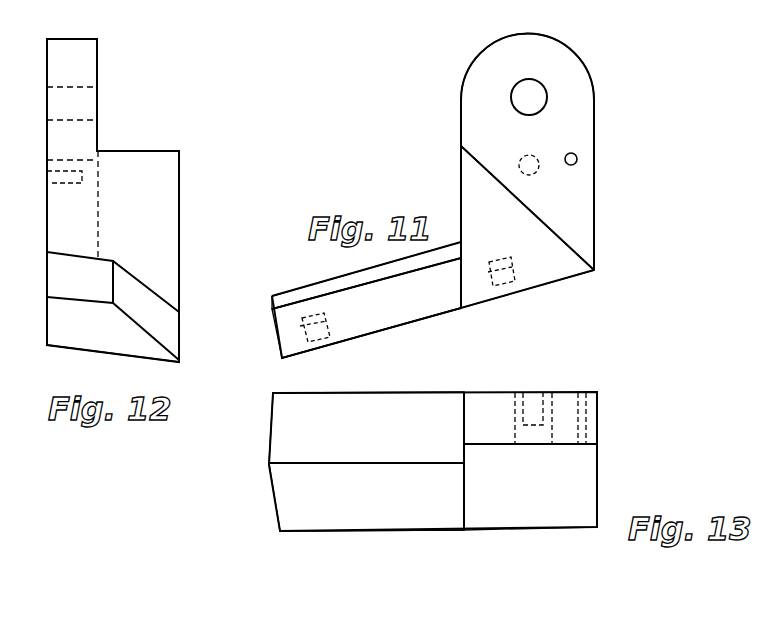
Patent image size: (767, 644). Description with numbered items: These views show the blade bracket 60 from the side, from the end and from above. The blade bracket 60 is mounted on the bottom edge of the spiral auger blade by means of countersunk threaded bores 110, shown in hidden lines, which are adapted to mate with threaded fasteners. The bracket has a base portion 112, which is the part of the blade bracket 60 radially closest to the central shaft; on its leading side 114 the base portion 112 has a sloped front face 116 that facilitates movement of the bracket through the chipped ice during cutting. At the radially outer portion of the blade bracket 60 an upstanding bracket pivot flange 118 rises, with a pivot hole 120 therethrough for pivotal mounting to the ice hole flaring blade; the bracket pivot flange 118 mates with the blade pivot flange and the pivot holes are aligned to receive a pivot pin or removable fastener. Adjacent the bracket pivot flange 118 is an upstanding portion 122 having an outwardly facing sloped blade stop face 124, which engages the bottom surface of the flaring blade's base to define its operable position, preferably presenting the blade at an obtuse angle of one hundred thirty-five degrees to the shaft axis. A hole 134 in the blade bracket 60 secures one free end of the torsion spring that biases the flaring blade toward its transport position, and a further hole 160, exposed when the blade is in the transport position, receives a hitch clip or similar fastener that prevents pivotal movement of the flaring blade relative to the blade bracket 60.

In FIG. 12, the blade bracket 60 is at (185, 145).
In FIG. 11, the blade bracket 60 is at (597, 90).
In FIG. 13, the blade bracket 60 is at (601, 410).
In FIG. 11, the countersunk threaded bores 110 is at (330, 332).
In FIG. 12, the base portion 112 is at (66, 344).
In FIG. 11, the base portion 112 is at (270, 316).
In FIG. 13, the base portion 112 is at (370, 436).
In FIG. 12, the leading side 114 is at (181, 340).
In FIG. 11, the leading side 114 is at (442, 312).
In FIG. 13, the leading side 114 is at (348, 532).
In FIG. 11, the sloped front face 116 is at (425, 299).
In FIG. 13, the sloped front face 116 is at (382, 499).
In FIG. 12, the bracket pivot flange 118 is at (88, 53).
In FIG. 11, the bracket pivot flange 118 is at (480, 72).
In FIG. 13, the bracket pivot flange 118 is at (562, 398).
In FIG. 12, the pivot hole 120 is at (70, 86).
In FIG. 11, the pivot hole 120 is at (540, 80).
In FIG. 13, the pivot hole 120 is at (513, 418).
In FIG. 12, the upstanding portion 122 is at (177, 192).
In FIG. 11, the upstanding portion 122 is at (506, 226).
In FIG. 13, the upstanding portion 122 is at (499, 515).
In FIG. 11, the sloped blade stop face 124 is at (548, 232).
In FIG. 13, the sloped blade stop face 124 is at (522, 477).
In FIG. 12, the hole 134 is at (54, 186).
In FIG. 11, the hole 134 is at (519, 160).
In FIG. 12, the hole 160 is at (68, 158).
In FIG. 11, the hole 160 is at (573, 153).